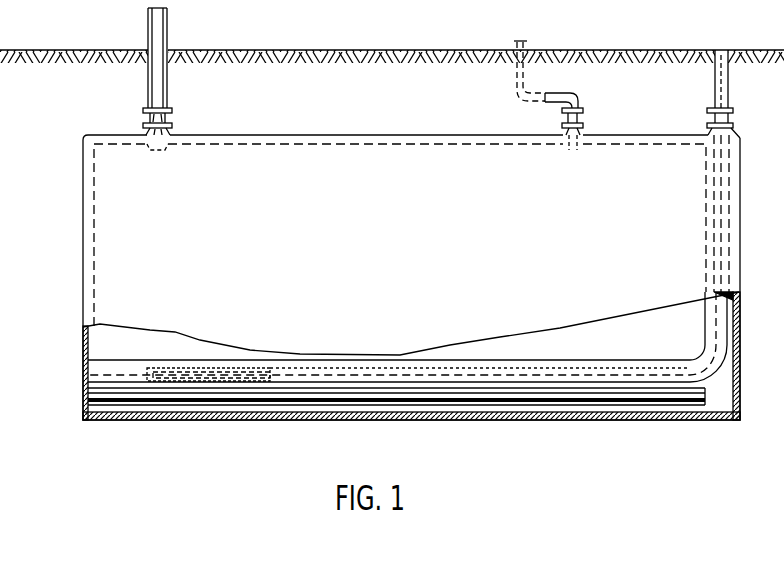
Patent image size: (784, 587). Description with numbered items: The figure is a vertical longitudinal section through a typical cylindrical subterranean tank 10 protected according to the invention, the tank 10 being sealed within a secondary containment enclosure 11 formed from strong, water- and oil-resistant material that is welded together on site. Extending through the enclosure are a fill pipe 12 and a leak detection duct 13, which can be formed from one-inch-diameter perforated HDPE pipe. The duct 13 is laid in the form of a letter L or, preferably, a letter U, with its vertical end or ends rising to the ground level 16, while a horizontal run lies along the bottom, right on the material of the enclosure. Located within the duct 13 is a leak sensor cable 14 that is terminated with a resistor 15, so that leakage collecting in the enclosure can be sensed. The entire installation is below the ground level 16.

The tank 10 is at (645, 349).
The storage tank 11 is at (227, 223).
The fill pipe 12 is at (168, 96).
The leak detection duct 13 is at (729, 88).
The leak sensor cable 14 is at (234, 375).
The resistor 15 is at (154, 372).
The ground level 16 is at (638, 50).